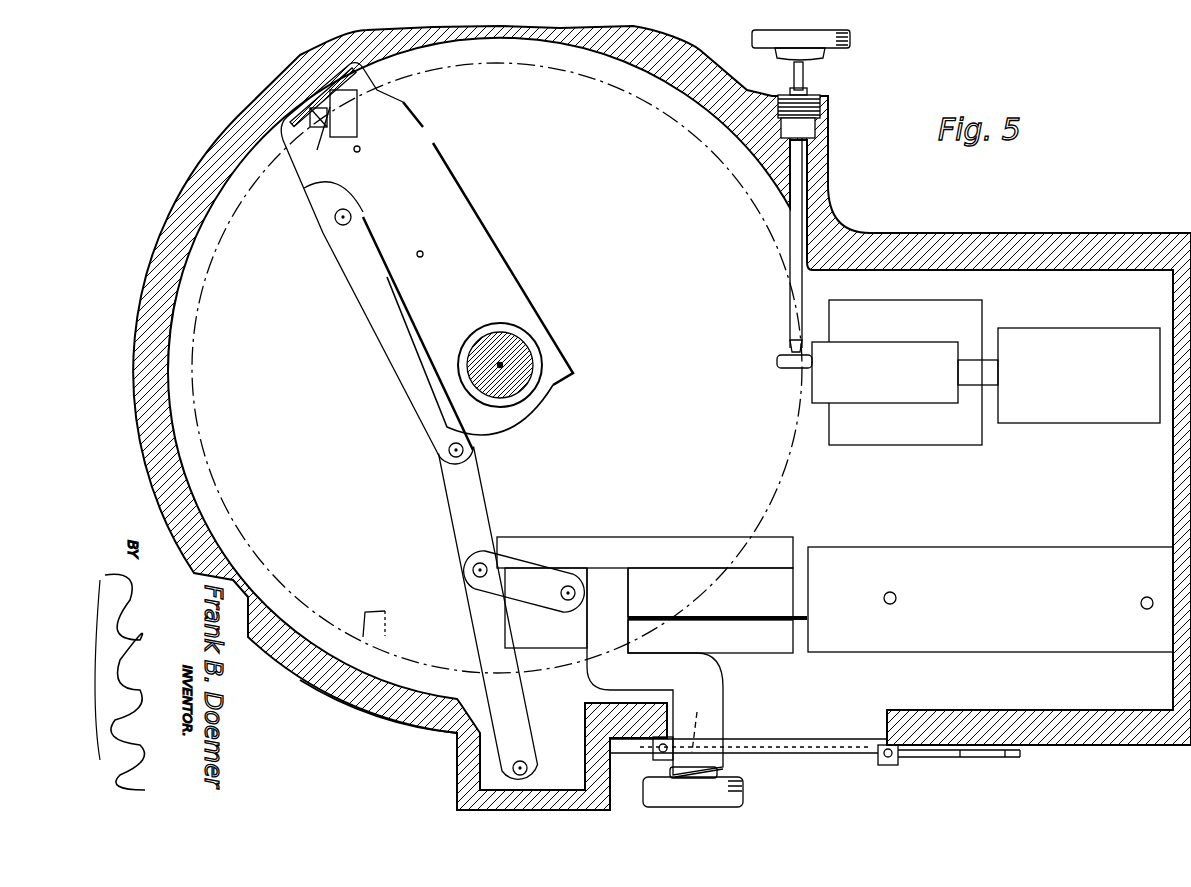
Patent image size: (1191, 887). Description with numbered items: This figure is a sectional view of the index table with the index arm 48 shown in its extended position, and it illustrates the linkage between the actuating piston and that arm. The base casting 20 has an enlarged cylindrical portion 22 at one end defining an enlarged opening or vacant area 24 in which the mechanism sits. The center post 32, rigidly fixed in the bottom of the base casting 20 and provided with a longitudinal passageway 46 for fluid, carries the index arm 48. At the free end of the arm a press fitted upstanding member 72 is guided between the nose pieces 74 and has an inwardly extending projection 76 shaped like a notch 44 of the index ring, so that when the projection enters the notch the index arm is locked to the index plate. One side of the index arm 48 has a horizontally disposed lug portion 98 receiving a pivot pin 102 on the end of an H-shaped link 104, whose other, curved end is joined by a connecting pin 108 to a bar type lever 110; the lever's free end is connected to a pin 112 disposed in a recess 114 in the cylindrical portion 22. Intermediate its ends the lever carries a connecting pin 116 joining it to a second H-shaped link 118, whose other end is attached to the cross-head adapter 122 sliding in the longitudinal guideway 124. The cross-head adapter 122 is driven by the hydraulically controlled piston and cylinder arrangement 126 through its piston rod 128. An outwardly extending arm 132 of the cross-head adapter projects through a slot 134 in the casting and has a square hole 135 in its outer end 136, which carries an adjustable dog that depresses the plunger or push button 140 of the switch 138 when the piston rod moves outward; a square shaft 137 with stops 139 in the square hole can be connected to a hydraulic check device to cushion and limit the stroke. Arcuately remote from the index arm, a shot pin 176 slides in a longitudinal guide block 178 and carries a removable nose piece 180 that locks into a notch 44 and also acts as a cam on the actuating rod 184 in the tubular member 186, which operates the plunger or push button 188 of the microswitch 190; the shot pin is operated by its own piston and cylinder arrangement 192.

The base casting 20 is at (1068, 240).
The enlarged cylindrical portion 22 is at (357, 707).
The enlarged opening or vacant area 24 is at (170, 425).
The center post 32 is at (520, 392).
The notch 44 is at (387, 626).
The longitudinal passageway 46 is at (500, 360).
The index arm 48 is at (490, 273).
The upstanding member 72 is at (320, 107).
The nose pieces 74 is at (300, 118).
The inwardly extending projection 76 is at (330, 108).
The lug portion 98 is at (327, 200).
The pivot pin 102 is at (348, 212).
The H-shaped link 104 is at (376, 311).
The connecting pin 108 is at (449, 456).
The bar type lever 110 is at (480, 523).
The pin 112 is at (530, 767).
The recess 114 is at (480, 752).
The connecting pin 116 is at (471, 571).
The H-shaped link 118 is at (516, 572).
The cross-head adapter 122 is at (580, 617).
The longitudinal guideway 124 is at (568, 543).
The piston and cylinder arrangement 126 is at (999, 552).
The piston rod 128 is at (661, 588).
The outwardly extending arm 132 is at (598, 580).
The slot 134 is at (887, 722).
The square hole 135 is at (700, 720).
The outer end with adjustable dog 136 is at (676, 779).
The square shaft 137 is at (932, 757).
The switch 138 is at (744, 797).
The stops 139 is at (880, 762).
The plunger or push button 140 is at (682, 787).
The shot pin 176 is at (883, 385).
The longitudinal guide block 178 is at (968, 405).
The nose piece 180 is at (795, 366).
The actuating rod 184 is at (791, 352).
The tubular member 186 is at (795, 212).
The plunger or push button 188 is at (806, 63).
The microswitch 190 is at (851, 42).
The piston and cylinder arrangement 192 is at (1076, 334).